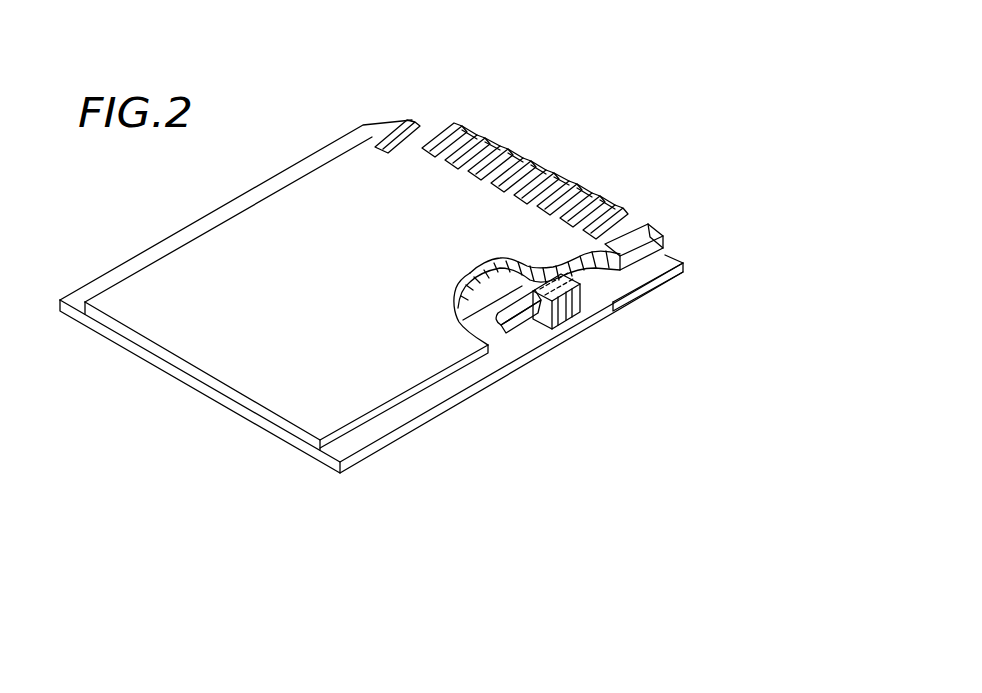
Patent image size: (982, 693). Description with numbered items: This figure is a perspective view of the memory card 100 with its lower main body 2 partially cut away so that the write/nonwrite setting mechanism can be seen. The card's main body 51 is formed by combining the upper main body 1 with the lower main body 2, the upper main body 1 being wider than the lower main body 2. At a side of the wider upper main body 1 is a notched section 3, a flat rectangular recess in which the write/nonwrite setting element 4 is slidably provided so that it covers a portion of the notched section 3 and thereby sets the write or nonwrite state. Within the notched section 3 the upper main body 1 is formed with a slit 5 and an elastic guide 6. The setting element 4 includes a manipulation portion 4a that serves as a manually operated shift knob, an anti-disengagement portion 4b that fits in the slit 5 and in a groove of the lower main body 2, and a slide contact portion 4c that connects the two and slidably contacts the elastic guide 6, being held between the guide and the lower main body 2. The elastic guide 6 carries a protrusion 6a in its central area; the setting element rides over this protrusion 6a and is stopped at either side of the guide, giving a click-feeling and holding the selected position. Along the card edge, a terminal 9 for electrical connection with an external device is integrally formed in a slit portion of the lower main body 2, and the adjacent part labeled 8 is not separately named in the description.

The memory card 100 is at (633, 71).
The main body 51 is at (371, 363).
The upper main body 1 is at (373, 433).
The lower main body 2 is at (425, 547).
The external terminals 8 is at (519, 151).
The terminal 9 is at (547, 193).
The write/nonwrite setting element 4 is at (617, 249).
The manipulation portion 4a is at (600, 322).
The anti-disengagement portion 4b is at (737, 320).
The slide contact portion 4c is at (661, 247).
The notched section 3 is at (566, 345).
The slit 5 is at (517, 324).
The elastic guide 6 is at (530, 331).
The protrusion 6a is at (543, 333).